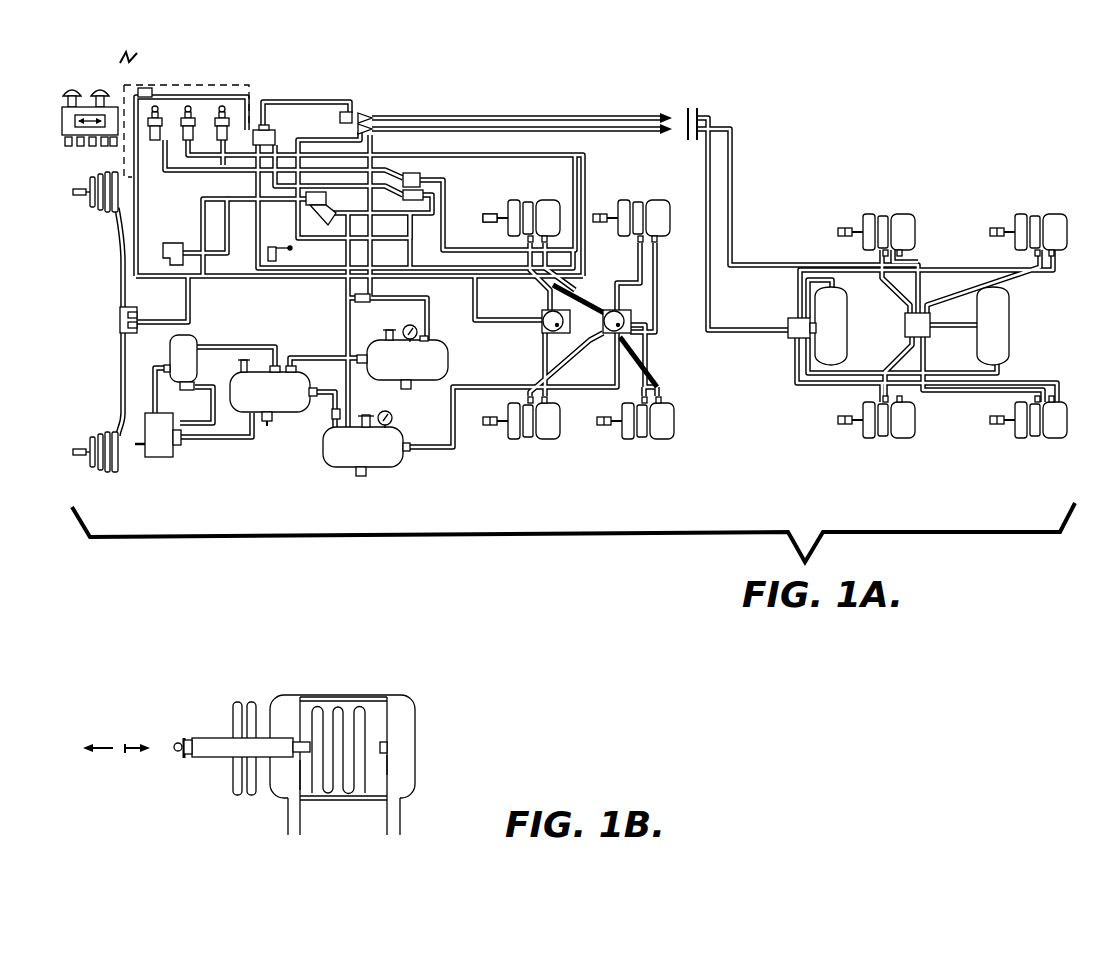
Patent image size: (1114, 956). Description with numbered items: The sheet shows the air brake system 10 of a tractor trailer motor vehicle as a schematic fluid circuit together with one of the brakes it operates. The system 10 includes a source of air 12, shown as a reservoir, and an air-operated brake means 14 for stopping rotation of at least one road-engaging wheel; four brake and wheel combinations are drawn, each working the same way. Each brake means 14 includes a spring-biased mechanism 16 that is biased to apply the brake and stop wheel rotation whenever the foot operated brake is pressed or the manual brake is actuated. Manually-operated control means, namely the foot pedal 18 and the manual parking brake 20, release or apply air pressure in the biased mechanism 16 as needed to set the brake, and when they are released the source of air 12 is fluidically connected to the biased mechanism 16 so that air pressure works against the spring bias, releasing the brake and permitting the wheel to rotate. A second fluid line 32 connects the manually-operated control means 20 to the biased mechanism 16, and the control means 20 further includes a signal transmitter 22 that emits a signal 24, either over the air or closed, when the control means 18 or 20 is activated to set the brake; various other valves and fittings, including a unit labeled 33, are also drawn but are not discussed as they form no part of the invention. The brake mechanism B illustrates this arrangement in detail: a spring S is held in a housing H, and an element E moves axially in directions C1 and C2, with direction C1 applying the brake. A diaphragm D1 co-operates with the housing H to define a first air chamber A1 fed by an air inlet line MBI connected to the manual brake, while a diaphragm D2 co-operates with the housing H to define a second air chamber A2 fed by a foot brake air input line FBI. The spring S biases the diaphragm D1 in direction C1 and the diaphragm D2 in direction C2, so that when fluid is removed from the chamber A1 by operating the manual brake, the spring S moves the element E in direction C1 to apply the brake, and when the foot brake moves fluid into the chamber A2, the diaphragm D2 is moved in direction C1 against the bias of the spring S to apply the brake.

In FIG. 1A, the air brake system 10 is at (634, 89).
In FIG. 1A, the source of air 12 is at (268, 426).
In FIG. 1A, the air-operated brake means 14 is at (511, 190).
In FIG. 1A, the spring-biased mechanism 16 is at (508, 222).
In FIG. 1A, the foot pedal 18 is at (340, 212).
In FIG. 1A, the manual parking brake 20 is at (229, 108).
In FIG. 1A, the signal transmitter 22 is at (151, 90).
In FIG. 1A, the signal 24 is at (99, 79).
In FIG. 1A, the second fluid line 32 is at (190, 176).
In FIG. 1A, the relay valve 33 is at (140, 242).
In FIG. 1B, the first air chamber A1 is at (400, 705).
In FIG. 1B, the second air chamber A2 is at (280, 705).
In FIG. 1B, the brake mechanism B is at (275, 729).
In FIG. 1B, the direction C1 is at (128, 745).
In FIG. 1B, the direction C2 is at (108, 752).
In FIG. 1B, the diaphragm D1 is at (390, 763).
In FIG. 1B, the diaphragm D2 is at (303, 780).
In FIG. 1B, the element E is at (389, 742).
In FIG. 1B, the foot brake air input line FBI is at (288, 815).
In FIG. 1B, the housing H is at (315, 697).
In FIG. 1B, the air inlet line MBI is at (400, 820).
In FIG. 1B, the spring S is at (380, 686).